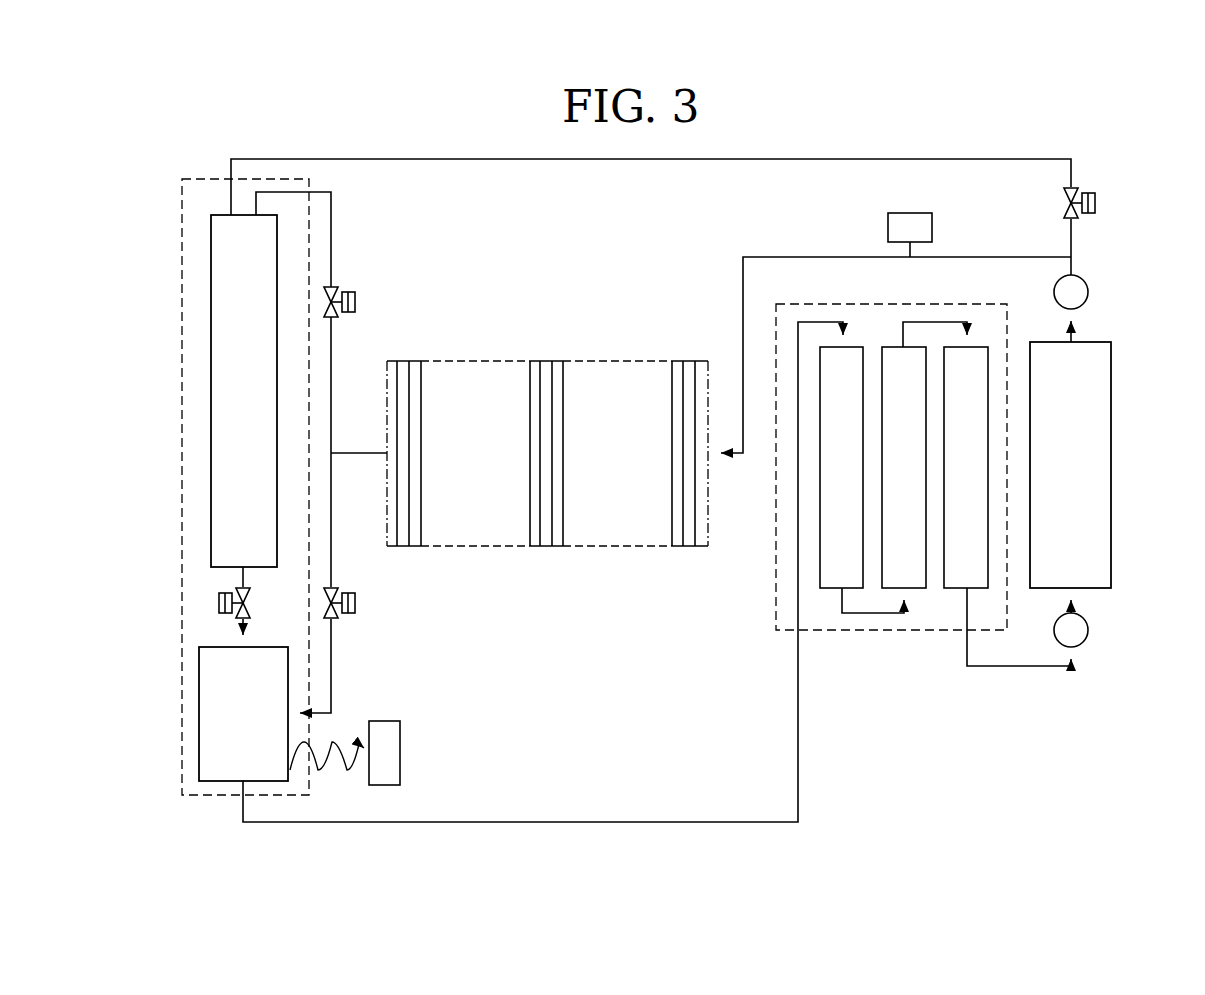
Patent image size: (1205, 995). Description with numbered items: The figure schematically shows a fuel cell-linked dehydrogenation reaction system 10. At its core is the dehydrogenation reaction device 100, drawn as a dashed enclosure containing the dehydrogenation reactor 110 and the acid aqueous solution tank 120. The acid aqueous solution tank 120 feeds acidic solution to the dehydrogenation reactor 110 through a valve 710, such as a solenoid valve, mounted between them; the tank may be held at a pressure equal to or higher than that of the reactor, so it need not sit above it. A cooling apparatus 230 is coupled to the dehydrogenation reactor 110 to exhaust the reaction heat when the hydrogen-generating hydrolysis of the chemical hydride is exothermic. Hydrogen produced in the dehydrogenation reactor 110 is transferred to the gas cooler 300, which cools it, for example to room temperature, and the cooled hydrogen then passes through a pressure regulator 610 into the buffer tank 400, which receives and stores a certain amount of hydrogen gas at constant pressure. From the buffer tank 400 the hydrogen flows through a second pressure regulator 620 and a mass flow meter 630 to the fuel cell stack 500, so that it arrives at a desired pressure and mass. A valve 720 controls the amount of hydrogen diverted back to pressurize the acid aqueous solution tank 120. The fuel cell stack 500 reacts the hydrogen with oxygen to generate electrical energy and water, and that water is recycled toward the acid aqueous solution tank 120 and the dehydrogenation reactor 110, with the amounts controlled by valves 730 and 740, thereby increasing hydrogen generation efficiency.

The dehydrogenation reaction system 10 is at (348, 97).
The dehydrogenation reaction device 100 is at (178, 166).
The dehydrogenation reactor 110 is at (189, 712).
The acid aqueous solution tank 120 is at (200, 398).
The cooling apparatus 230 is at (383, 707).
The gas cooler 300 is at (888, 648).
The buffer tank 400 is at (1124, 451).
The fuel cell stack 500 is at (551, 348).
The pressure regulator 610 is at (1103, 619).
The pressure regulator 620 is at (1103, 281).
The mass flow meter 630 is at (948, 212).
The valve 710 is at (207, 603).
The valve 720 is at (1110, 191).
The valve 730 is at (372, 602).
The valve 740 is at (372, 300).